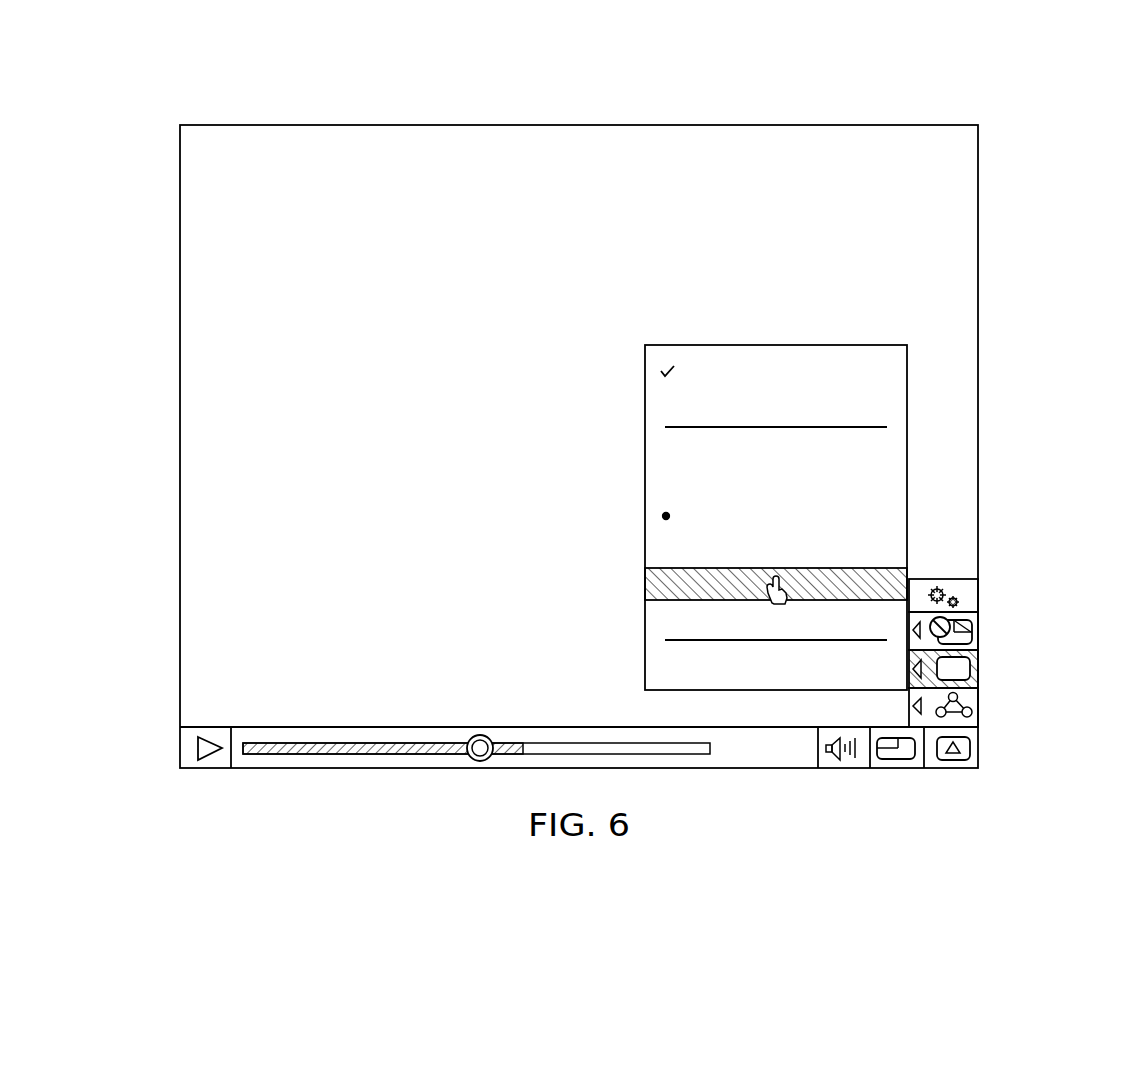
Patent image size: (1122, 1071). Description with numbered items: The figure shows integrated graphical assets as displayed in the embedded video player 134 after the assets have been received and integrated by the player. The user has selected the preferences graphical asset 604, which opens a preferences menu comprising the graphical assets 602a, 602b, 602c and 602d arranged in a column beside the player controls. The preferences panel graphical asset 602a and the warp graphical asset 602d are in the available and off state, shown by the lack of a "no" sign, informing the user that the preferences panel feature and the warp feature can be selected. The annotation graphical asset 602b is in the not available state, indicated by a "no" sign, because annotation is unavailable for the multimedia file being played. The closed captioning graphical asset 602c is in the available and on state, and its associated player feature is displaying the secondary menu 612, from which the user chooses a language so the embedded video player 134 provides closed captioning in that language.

The embedded video player 134 is at (154, 104).
The secondary menu 612 is at (907, 372).
The preferences panel graphical asset 602a is at (978, 600).
The annotation graphical asset 602b is at (978, 638).
The closed captioning graphical asset 602c is at (978, 672).
The warp graphical asset 602d is at (978, 710).
The preferences graphical asset 604 is at (970, 748).